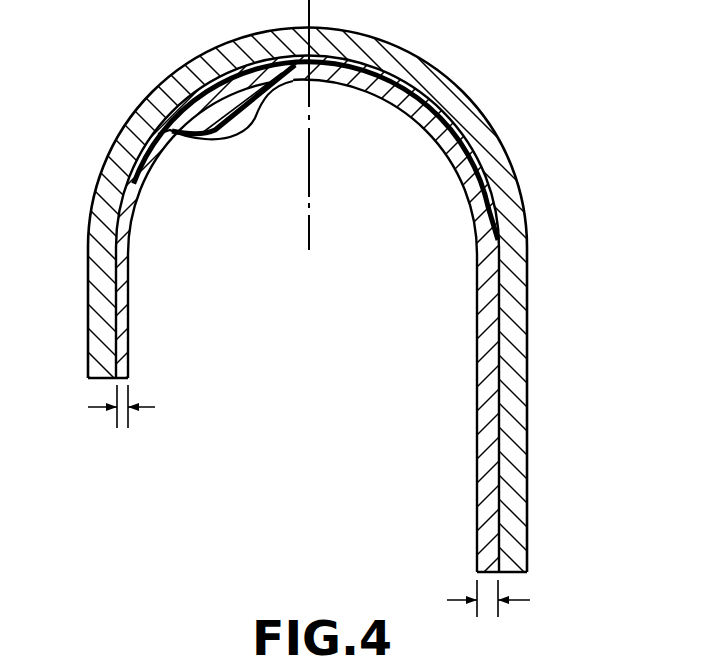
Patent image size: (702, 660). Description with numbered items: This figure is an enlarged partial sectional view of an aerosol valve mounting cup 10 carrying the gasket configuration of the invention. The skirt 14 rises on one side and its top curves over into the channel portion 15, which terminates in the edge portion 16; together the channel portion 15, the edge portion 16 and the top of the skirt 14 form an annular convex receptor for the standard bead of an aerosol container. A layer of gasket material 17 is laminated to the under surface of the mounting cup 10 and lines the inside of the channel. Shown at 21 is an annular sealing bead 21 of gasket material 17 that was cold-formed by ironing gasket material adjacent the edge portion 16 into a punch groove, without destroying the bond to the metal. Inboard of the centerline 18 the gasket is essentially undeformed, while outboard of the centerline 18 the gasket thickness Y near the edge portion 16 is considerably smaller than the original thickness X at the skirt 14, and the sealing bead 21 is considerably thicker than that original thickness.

The mounting cup 10 is at (506, 127).
The skirt 14 is at (528, 393).
The channel portion 15 is at (197, 59).
The edge portion 16 is at (88, 303).
The gasket material 17 is at (477, 390).
The centerline 18 is at (311, 14).
The sealing bead 21 is at (240, 141).